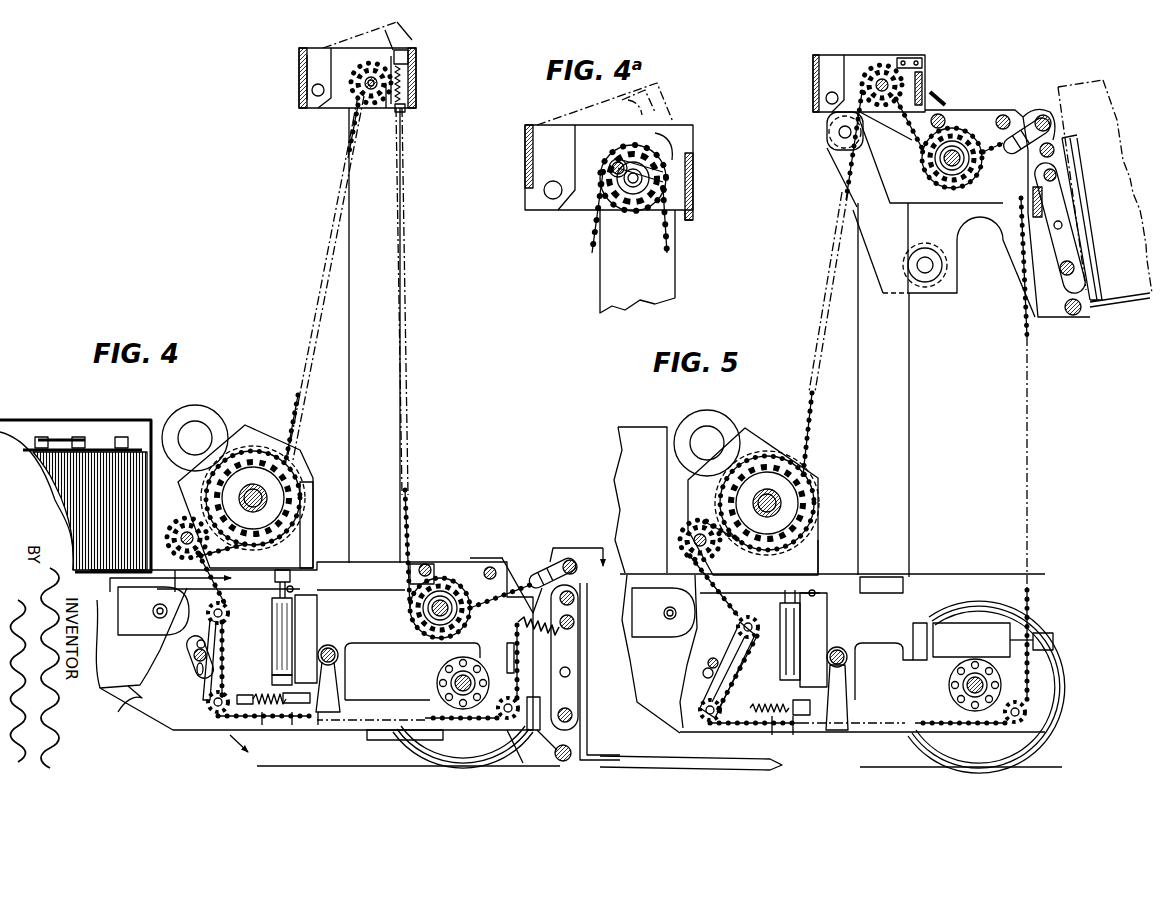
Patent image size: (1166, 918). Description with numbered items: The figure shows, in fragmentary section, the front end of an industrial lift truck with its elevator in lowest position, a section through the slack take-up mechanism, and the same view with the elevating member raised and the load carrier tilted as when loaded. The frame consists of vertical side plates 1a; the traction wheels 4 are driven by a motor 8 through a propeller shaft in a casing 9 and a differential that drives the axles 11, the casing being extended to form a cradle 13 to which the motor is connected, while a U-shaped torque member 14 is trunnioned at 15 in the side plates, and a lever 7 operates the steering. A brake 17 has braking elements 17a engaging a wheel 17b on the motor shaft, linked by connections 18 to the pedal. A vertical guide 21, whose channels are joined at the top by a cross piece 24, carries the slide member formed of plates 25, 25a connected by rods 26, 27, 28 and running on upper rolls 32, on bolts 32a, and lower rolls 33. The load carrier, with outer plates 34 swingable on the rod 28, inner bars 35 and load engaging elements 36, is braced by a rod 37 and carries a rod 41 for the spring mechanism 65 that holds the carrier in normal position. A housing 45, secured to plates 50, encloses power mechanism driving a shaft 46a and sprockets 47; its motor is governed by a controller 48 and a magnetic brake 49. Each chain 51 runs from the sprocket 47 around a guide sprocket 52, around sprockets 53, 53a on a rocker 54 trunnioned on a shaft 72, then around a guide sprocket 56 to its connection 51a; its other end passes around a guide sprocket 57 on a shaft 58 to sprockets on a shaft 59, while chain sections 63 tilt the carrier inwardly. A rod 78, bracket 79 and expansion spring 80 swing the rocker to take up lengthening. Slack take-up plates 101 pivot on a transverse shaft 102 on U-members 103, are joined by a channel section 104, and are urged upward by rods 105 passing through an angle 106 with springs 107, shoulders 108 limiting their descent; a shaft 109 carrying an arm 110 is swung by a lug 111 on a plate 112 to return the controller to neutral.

In FIG. 4, the side plates 1a is at (311, 646).
In FIG. 4, the traction wheels 4 is at (415, 742).
In FIG. 5, the traction wheels 4 is at (915, 745).
In FIG. 4, the lever 7 is at (122, 594).
In FIG. 4, the motor 8 is at (248, 666).
In FIG. 5, the motor 8 is at (832, 653).
In FIG. 5, the casing 9 is at (993, 640).
In FIG. 4, the axles 11 is at (437, 687).
In FIG. 5, the axles 11 is at (975, 685).
In FIG. 4, the cradle 13 is at (366, 650).
In FIG. 5, the cradle 13 is at (883, 656).
In FIG. 5, the torque member 14 is at (833, 726).
In FIG. 4, the trunnions 15 is at (322, 649).
In FIG. 5, the trunnions 15 is at (836, 647).
In FIG. 4, the brake 17 is at (273, 636).
In FIG. 5, the brake 17 is at (781, 635).
In FIG. 4, the braking elements 17a is at (272, 605).
In FIG. 4, the wheel 17b is at (272, 650).
In FIG. 4, the connections 18 is at (300, 588).
In FIG. 5, the connections 18 is at (763, 593).
In FIG. 4, the guide 21 is at (374, 335).
In FIG. 5, the guide 21 is at (883, 390).
In FIG. 4, the cross piece 24 is at (416, 97).
In FIG. 5, the cross piece 24 is at (933, 92).
In FIG. 4, the outer plates 25 is at (525, 766).
In FIG. 5, the outer plates 25 is at (837, 167).
In FIG. 4, the inner plates 25a is at (474, 570).
In FIG. 5, the inner plates 25a is at (883, 186).
In FIG. 4, the rod 26 is at (426, 563).
In FIG. 4, the rod 27 is at (501, 560).
In FIG. 5, the rod 27 is at (770, 706).
In FIG. 4, the rod 28 is at (563, 762).
In FIG. 5, the rod 28 is at (1073, 315).
In FIG. 5, the upper rolls 32 is at (826, 148).
In FIG. 5, the bolt 32a is at (838, 132).
In FIG. 5, the lower rolls 33 is at (931, 283).
In FIG. 4, the outer vertical plates 34 is at (552, 562).
In FIG. 5, the outer vertical plates 34 is at (1030, 112).
In FIG. 4, the inner vertical bars 35 is at (576, 641).
In FIG. 5, the inner vertical bars 35 is at (1070, 246).
In FIG. 5, the load engaging elements 36 is at (691, 754).
In FIG. 4, the rod 37 is at (579, 559).
In FIG. 4, the rod 41 is at (570, 671).
In FIG. 4, the housing 45 is at (264, 433).
In FIG. 5, the housing 45 is at (768, 433).
In FIG. 4, the shaft 46a is at (268, 490).
In FIG. 5, the shaft 46a is at (784, 494).
In FIG. 4, the sprockets 47 is at (263, 478).
In FIG. 5, the sprockets 47 is at (770, 478).
In FIG. 4, the controller 48 is at (150, 634).
In FIG. 5, the controller 48 is at (664, 636).
In FIG. 4, the magnetic brake 49 is at (197, 406).
In FIG. 5, the magnetic brake 49 is at (707, 412).
In FIG. 4, the plates 50 is at (308, 541).
In FIG. 5, the plates 50 is at (820, 546).
In FIG. 4, the sprocket chains 51 is at (410, 497).
In FIG. 5, the sprocket chains 51 is at (817, 432).
In FIG. 5, the connection 51a is at (1020, 200).
In FIG. 4, the guide sprocket 52 is at (201, 548).
In FIG. 5, the guide sprocket 52 is at (879, 100).
In FIG. 4, the sprocket 53 is at (209, 612).
In FIG. 5, the sprocket 53 is at (737, 620).
In FIG. 4, the sprocket 53a is at (226, 697).
In FIG. 5, the sprocket 53a is at (722, 698).
In FIG. 4, the rocker 54 is at (203, 680).
In FIG. 5, the rocker 54 is at (730, 648).
In FIG. 4, the guide sprocket 56 is at (504, 699).
In FIG. 5, the guide sprocket 56 is at (1015, 712).
In FIG. 4, the guide sprocket 57 is at (373, 101).
In FIG. 4, the shaft 58 is at (371, 97).
In FIG. 5, the shaft 58 is at (882, 68).
In FIG. 4, the shaft 59 is at (446, 590).
In FIG. 5, the shaft 59 is at (961, 135).
In FIG. 4, the chain sections 63 is at (497, 610).
In FIG. 4, the spring mechanism 65 is at (538, 618).
In FIG. 4, the shaft 72 is at (191, 652).
In FIG. 5, the shaft 72 is at (700, 665).
In FIG. 4, the rod 78 is at (318, 726).
In FIG. 4, the bracket 79 is at (292, 726).
In FIG. 5, the bracket 79 is at (798, 737).
In FIG. 4, the expansion spring 80 is at (262, 726).
In FIG. 5, the expansion spring 80 is at (777, 737).
In FIG. 4, the plates 101 is at (347, 50).
In FIG. 4A, the plates 101 is at (590, 136).
In FIG. 5, the plates 101 is at (853, 60).
In FIG. 4, the transverse shaft 102 is at (313, 96).
In FIG. 5, the transverse shaft 102 is at (826, 98).
In FIG. 4, the U-members 103 is at (300, 72).
In FIG. 4, the channel section 104 is at (410, 57).
In FIG. 4, the rods 105 is at (392, 110).
In FIG. 4, the angle 106 is at (404, 113).
In FIG. 4, the expansion spring 107 is at (402, 82).
In FIG. 4, the shoulders 108 is at (410, 68).
In FIG. 4A, the shaft 109 is at (612, 166).
In FIG. 4A, the arm 110 is at (650, 170).
In FIG. 4A, the lug 111 is at (652, 200).
In FIG. 4A, the plate 112 is at (675, 130).